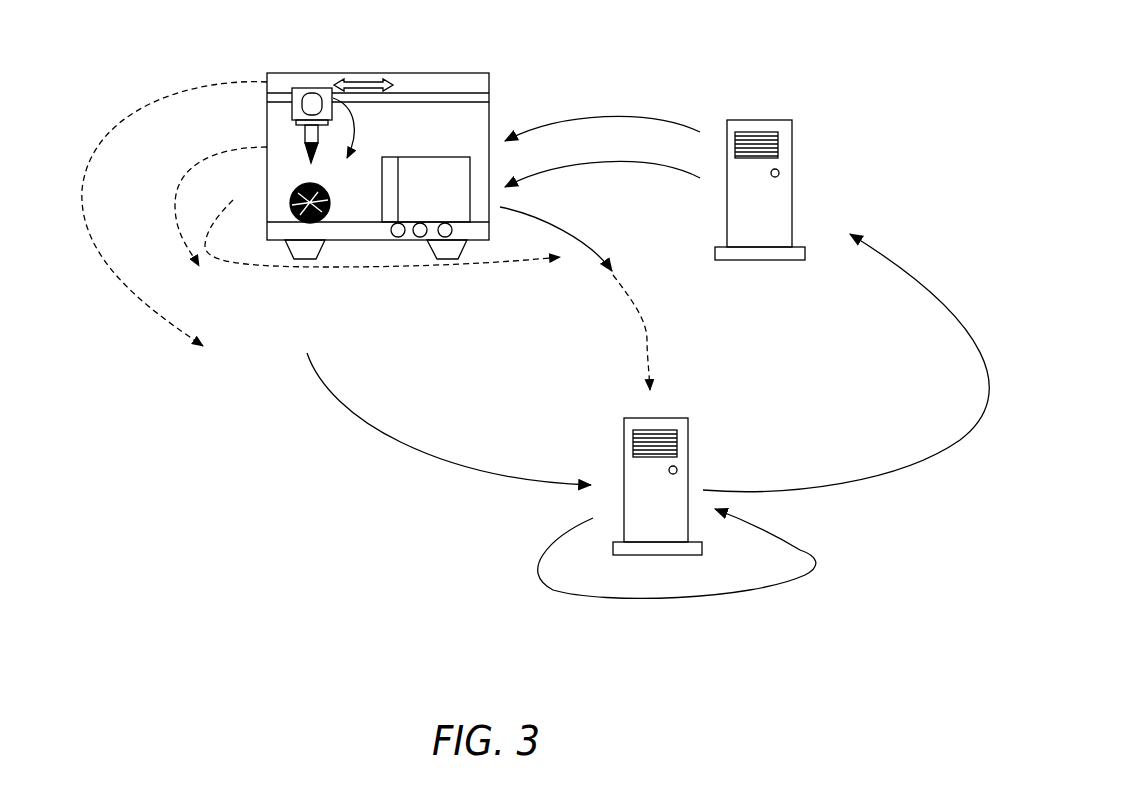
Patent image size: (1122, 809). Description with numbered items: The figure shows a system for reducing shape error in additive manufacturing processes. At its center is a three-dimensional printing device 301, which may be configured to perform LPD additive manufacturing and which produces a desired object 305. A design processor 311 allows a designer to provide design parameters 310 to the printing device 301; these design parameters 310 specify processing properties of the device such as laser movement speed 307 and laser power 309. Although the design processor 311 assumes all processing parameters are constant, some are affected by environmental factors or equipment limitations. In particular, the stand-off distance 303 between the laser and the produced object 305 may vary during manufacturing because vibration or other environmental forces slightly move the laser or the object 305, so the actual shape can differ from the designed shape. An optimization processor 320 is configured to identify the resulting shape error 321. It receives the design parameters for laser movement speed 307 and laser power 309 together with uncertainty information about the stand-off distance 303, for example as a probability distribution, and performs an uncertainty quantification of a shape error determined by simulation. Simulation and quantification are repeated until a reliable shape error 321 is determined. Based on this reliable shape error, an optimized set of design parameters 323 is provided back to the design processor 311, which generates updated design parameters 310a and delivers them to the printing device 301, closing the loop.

The 3D printing device 301 is at (377, 73).
The stand-off distance 303 is at (301, 160).
The desired object 305 is at (327, 218).
The laser movement speed 307 is at (137, 113).
The laser power 309 is at (177, 213).
The design parameters 310 is at (657, 121).
The updated design parameters 310a is at (673, 173).
The design processor 311 is at (748, 120).
The optimization processor 320 is at (624, 438).
The shape error 321 is at (572, 598).
The optimized set of design parameters 323 is at (880, 487).